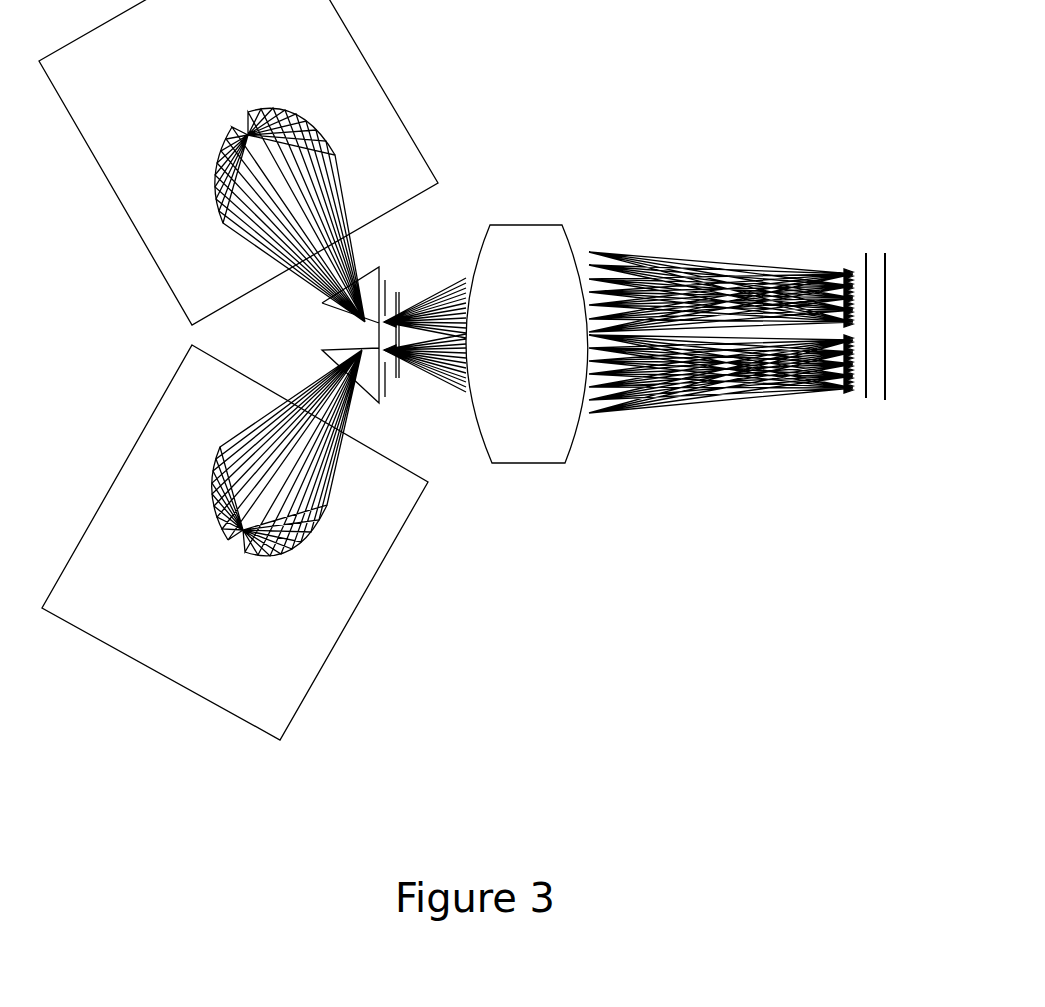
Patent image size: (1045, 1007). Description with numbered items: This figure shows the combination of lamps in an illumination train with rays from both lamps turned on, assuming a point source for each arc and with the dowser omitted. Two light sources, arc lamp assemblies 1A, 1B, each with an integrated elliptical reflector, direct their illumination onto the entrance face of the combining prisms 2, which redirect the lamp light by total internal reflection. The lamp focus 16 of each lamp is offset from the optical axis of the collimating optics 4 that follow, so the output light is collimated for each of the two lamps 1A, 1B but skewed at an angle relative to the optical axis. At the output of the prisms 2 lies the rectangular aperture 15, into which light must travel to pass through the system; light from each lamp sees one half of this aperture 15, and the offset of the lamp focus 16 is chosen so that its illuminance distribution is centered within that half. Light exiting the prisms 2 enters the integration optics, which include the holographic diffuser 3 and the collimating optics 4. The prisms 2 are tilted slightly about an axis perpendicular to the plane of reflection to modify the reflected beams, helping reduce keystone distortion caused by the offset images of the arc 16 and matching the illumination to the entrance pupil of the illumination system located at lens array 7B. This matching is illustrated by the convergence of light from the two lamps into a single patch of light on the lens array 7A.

The arc lamp assembly 1A is at (157, 198).
The arc lamp assembly 1B is at (160, 472).
The combining prisms 2 is at (329, 358).
The holographic diffuser 3 is at (402, 294).
The collimating optics 4 is at (527, 453).
The aperture 15 is at (388, 278).
The lamp focus 16 is at (390, 365).
The lens array 7A is at (866, 262).
The lens array 7B is at (887, 260).